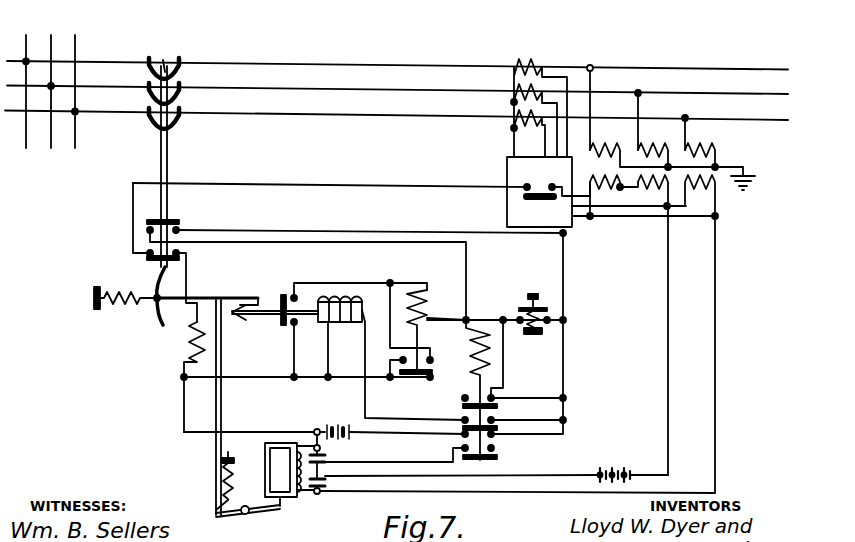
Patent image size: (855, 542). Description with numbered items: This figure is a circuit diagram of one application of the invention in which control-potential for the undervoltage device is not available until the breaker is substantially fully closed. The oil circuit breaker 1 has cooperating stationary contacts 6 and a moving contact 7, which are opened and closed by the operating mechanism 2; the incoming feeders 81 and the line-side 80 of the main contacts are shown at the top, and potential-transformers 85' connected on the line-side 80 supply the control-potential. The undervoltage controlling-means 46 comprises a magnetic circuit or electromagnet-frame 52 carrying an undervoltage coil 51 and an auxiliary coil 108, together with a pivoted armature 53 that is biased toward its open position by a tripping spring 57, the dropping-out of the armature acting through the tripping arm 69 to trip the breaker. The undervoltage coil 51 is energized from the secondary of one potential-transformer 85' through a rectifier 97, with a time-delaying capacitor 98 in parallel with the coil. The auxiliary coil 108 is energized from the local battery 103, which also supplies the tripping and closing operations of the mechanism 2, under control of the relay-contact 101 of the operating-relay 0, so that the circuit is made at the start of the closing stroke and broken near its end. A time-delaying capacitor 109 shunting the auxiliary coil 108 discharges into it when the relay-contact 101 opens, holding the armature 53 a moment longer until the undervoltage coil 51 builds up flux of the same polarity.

The oil circuit breaker 1 is at (147, 151).
The operating mechanism 2 is at (218, 284).
The stationary contacts 6 is at (150, 60).
The moving contact 7 is at (164, 62).
The operating-relay 0 is at (478, 379).
The line-side 80 is at (733, 69).
The feeder conductors 81 is at (27, 53).
The potential-transformers 85' is at (675, 127).
The rectifier 97 is at (626, 468).
The time-delaying capacitor 98 is at (328, 484).
The relay-contact 101 is at (492, 449).
The local battery 103 is at (333, 430).
The auxiliary coil 108 is at (303, 446).
The time-delaying capacitor 109 is at (328, 460).
The undervoltage coil 51 is at (297, 491).
The electromagnet-frame 52 is at (266, 447).
The pivoted armature 53 is at (281, 504).
The tripping spring 57 is at (242, 476).
The tripping arm 69 is at (214, 500).
The undervoltage controlling-means 46 is at (203, 473).